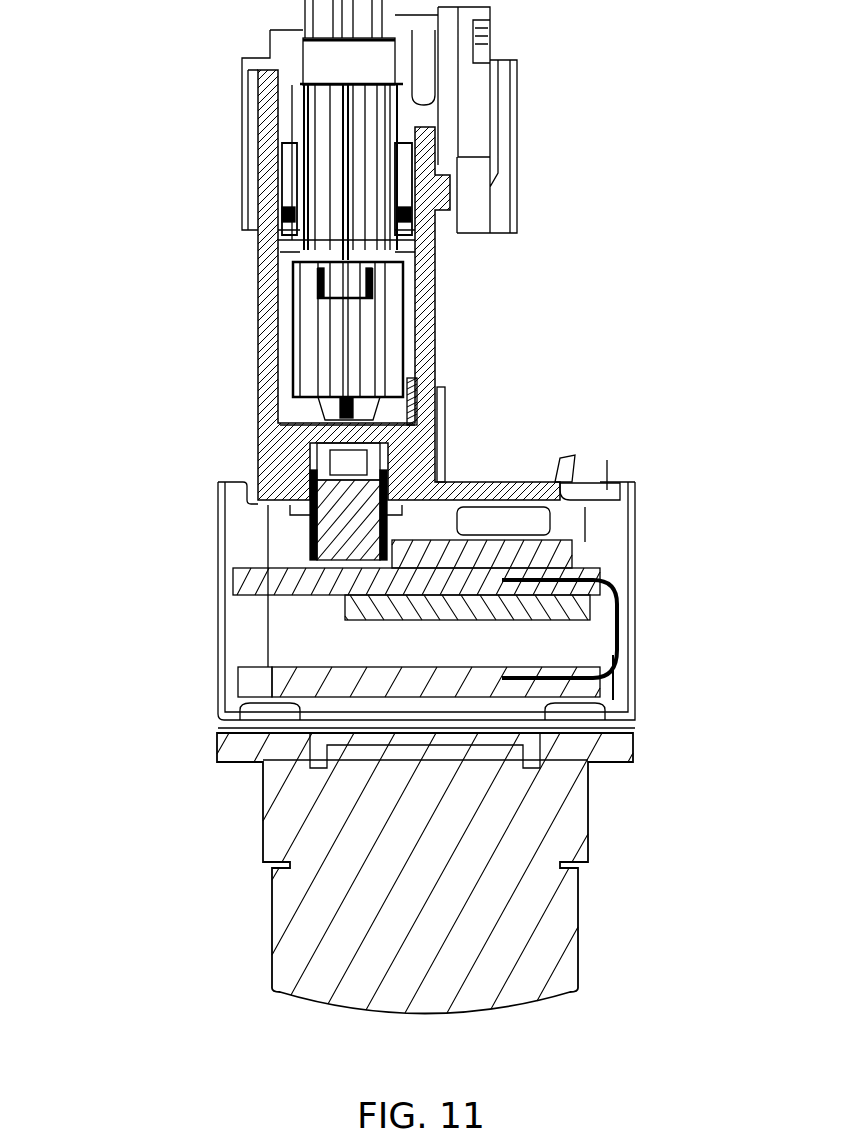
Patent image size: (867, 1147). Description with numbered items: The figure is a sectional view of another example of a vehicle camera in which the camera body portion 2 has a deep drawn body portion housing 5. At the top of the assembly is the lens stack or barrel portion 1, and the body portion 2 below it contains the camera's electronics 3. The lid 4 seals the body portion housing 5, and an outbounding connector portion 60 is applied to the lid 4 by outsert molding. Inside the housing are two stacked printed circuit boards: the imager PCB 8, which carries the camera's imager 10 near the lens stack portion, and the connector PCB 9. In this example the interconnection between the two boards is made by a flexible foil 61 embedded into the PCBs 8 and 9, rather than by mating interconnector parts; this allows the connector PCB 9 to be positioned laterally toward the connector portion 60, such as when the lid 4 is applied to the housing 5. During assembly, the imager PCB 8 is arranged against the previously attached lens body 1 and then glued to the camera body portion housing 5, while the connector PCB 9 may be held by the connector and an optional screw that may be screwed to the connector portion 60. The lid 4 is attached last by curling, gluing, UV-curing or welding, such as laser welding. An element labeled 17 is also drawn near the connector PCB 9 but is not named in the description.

The lens stack or barrel portion 1 is at (300, 875).
The body portion 2 is at (200, 496).
The electronics 3 is at (276, 614).
The lid 4 is at (608, 490).
The body portion housing 5 is at (633, 550).
The imager PCB 8 is at (250, 682).
The connector PCB 9 is at (262, 582).
The imager 10 is at (245, 700).
The plunger 17 is at (292, 550).
The connector portion 60 is at (260, 180).
The flexible foil 61 is at (625, 665).